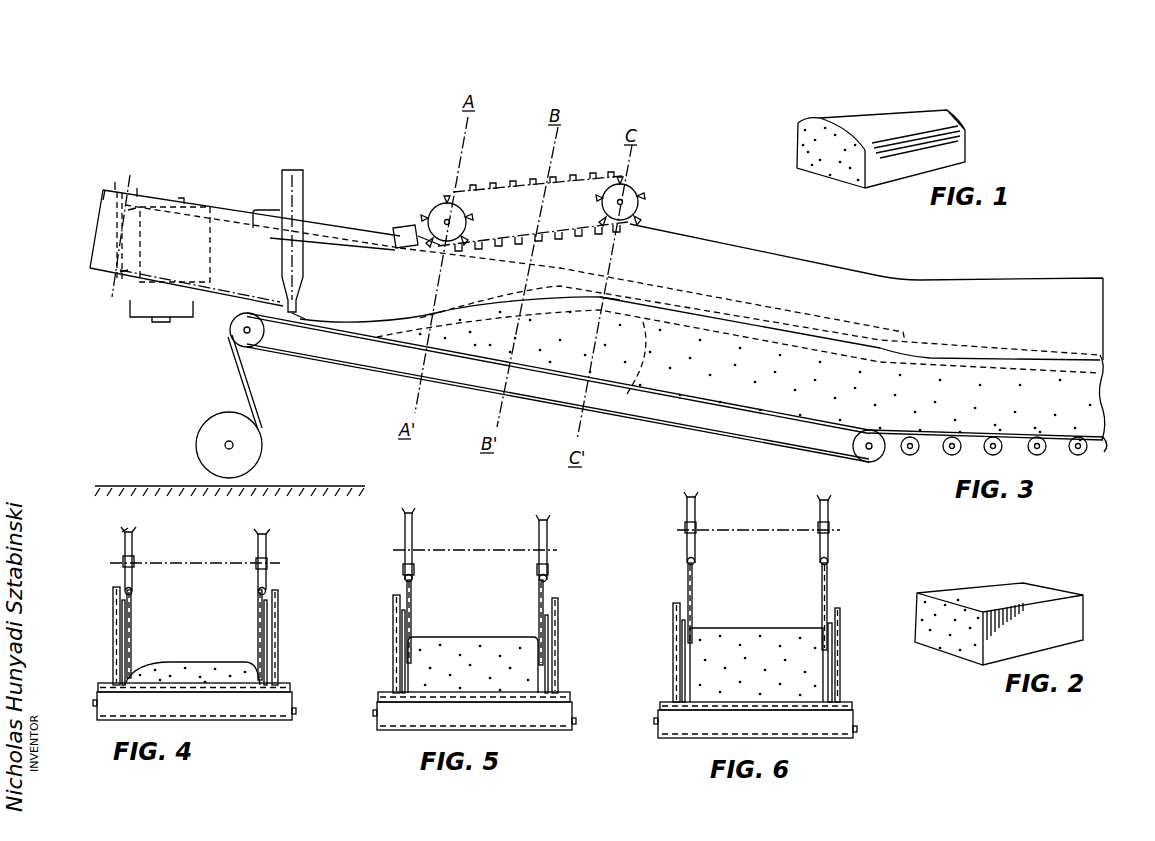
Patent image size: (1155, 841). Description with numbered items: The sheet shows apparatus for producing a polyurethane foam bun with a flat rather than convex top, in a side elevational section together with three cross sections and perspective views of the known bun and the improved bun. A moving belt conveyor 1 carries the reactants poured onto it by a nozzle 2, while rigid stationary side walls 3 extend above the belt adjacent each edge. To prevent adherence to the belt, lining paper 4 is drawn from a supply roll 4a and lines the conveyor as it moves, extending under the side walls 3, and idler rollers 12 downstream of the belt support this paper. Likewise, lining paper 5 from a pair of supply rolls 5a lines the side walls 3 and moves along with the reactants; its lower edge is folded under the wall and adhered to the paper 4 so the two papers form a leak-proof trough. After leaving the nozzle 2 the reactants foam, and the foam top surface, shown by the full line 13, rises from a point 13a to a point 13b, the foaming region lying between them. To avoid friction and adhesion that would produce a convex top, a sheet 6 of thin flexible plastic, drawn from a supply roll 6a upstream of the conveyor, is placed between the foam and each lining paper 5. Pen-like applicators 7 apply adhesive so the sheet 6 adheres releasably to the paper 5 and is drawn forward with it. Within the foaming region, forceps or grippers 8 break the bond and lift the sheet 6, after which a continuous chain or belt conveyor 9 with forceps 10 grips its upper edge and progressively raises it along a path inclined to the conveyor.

In FIG. 3, the moving belt conveyor 1 is at (318, 356).
In FIG. 3, the nozzle 2 is at (292, 172).
In FIG. 3, the rigid stationary side walls 3 is at (333, 228).
In FIG. 4, the rigid stationary side walls 3 is at (113, 615).
In FIG. 5, the rigid stationary side walls 3 is at (395, 607).
In FIG. 6, the rigid stationary side walls 3 is at (673, 612).
In FIG. 3, the lining paper 4 is at (248, 391).
In FIG. 4, the lining paper 4 is at (258, 688).
In FIG. 5, the lining paper 4 is at (540, 698).
In FIG. 6, the lining paper 4 is at (820, 707).
In FIG. 3, the supply roll 4a is at (200, 433).
In FIG. 3, the lining paper 5 is at (1005, 351).
In FIG. 4, the lining paper 5 is at (121, 651).
In FIG. 5, the lining paper 5 is at (402, 647).
In FIG. 6, the lining paper 5 is at (683, 660).
In FIG. 3, the supply rolls 5a is at (139, 303).
In FIG. 3, the sheet of thin flexible plastic material 6 is at (761, 262).
In FIG. 4, the sheet of thin flexible plastic material 6 is at (131, 627).
In FIG. 5, the sheet of thin flexible plastic material 6 is at (410, 628).
In FIG. 6, the sheet of thin flexible plastic material 6 is at (693, 615).
In FIG. 3, the supply roll 6a is at (113, 200).
In FIG. 3, the pen-like applicators 7 is at (151, 238).
In FIG. 3, the forceps or grippers 8 is at (400, 228).
In FIG. 3, the continuous chain or belt conveyor 9 is at (447, 216).
In FIG. 4, the continuous chain or belt conveyor 9 is at (124, 553).
In FIG. 3, the forceps 10 is at (641, 188).
In FIG. 4, the forceps 10 is at (140, 530).
In FIG. 3, the idler rollers 12 is at (948, 451).
In FIG. 3, the foam top surface 13 is at (485, 306).
In FIG. 3, the point 13a is at (333, 320).
In FIG. 3, the point 13b is at (610, 298).